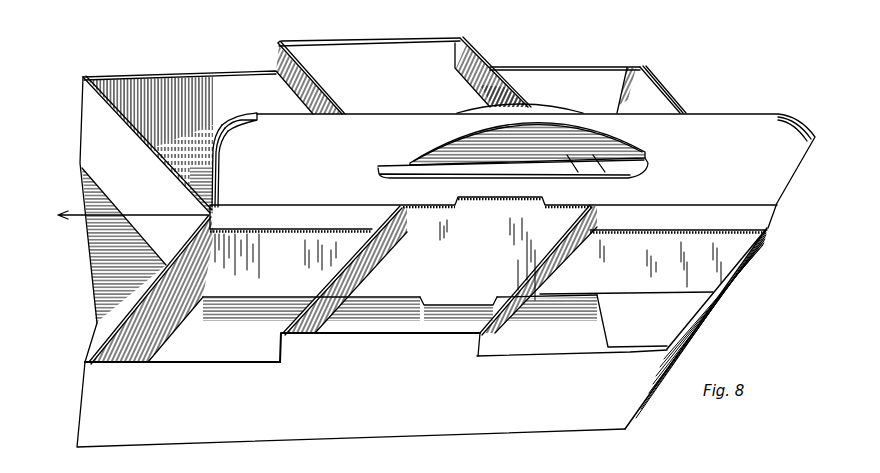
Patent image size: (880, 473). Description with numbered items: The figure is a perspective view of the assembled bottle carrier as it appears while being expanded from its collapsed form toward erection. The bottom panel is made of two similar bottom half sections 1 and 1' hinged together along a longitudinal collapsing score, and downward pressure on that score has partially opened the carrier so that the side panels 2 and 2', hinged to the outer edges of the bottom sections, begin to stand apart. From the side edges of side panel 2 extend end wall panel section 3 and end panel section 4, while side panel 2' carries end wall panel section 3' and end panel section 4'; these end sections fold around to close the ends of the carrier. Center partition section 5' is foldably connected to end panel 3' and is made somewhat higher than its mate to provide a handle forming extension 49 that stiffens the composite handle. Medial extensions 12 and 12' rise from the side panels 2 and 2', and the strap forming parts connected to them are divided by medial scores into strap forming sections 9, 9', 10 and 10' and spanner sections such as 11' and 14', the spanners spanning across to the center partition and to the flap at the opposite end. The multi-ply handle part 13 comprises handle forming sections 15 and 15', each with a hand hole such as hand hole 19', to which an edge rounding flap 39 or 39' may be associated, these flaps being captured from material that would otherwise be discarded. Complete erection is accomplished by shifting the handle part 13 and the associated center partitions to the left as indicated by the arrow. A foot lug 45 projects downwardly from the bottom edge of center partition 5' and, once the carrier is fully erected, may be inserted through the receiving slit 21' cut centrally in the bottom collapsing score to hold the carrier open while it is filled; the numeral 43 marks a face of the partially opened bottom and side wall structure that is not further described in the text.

The bottom half section 1 is at (337, 200).
The bottom half section 1' is at (360, 328).
The side panel 2 is at (361, 64).
The side panel 2' is at (372, 398).
The end wall panel section 3 is at (131, 144).
The end wall panel section 3' is at (151, 289).
The end panel section 4 is at (665, 88).
The end panel section 4' is at (698, 328).
The center partition section 5' is at (487, 259).
The strap forming section 9 is at (291, 72).
The strap forming section 9' is at (346, 270).
The strap forming section 10 is at (530, 98).
The strap forming section 10' is at (537, 280).
The spanner section 11' is at (291, 247).
The medial extension 12 is at (369, 32).
The medial extension 12' is at (380, 359).
The multi-ply handle part 13 is at (752, 106).
The spanner section 14' is at (653, 254).
The handle forming section 15 is at (211, 160).
The handle forming section 15' is at (240, 117).
The hand hole cutout 19' is at (510, 154).
The receiving slit 21' is at (400, 330).
The edge rounding flap 39 is at (520, 78).
The edge rounding flap 39' is at (527, 143).
The wall face 43 is at (88, 272).
The foot lug 45 is at (470, 298).
The handle forming extension 49 is at (217, 177).